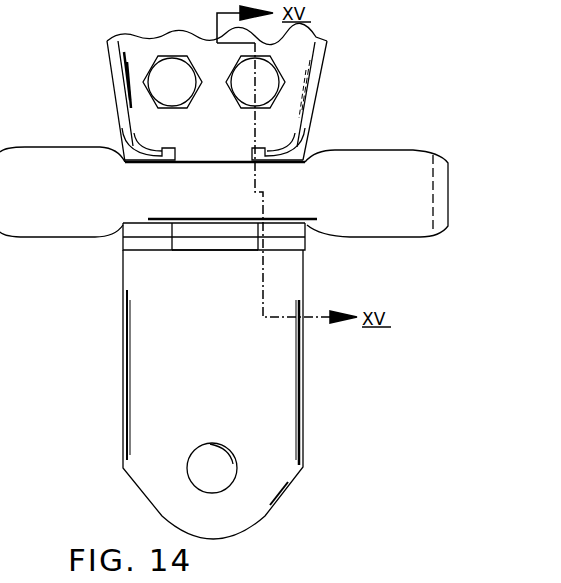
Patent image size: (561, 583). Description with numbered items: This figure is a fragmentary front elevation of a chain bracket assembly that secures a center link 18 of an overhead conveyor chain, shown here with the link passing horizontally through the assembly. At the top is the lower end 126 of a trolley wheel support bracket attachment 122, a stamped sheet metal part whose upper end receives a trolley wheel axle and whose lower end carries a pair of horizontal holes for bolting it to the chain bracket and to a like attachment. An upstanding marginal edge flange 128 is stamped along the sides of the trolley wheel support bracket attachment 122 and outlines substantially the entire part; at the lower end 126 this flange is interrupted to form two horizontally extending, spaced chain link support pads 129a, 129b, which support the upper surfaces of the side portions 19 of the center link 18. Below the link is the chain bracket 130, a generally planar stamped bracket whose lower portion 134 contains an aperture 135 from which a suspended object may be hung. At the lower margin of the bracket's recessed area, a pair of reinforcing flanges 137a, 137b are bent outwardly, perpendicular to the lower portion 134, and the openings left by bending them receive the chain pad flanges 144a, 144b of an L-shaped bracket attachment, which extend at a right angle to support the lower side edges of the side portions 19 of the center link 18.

The center link 18 is at (424, 143).
The side portions 19 is at (217, 210).
The trolley wheel support bracket attachment 122 is at (324, 34).
The lower end 126 is at (222, 142).
The marginal edge flange 128 is at (117, 65).
The chain link support pad 129a is at (160, 150).
The chain link support pad 129b is at (270, 150).
The chain bracket 130 is at (315, 360).
The lower portion 134 is at (227, 369).
The aperture 135 is at (236, 466).
The reinforcing flange 137a is at (148, 245).
The reinforcing flange 137b is at (283, 245).
The chain pad flange 144a is at (140, 230).
The chain pad flange 144b is at (295, 233).